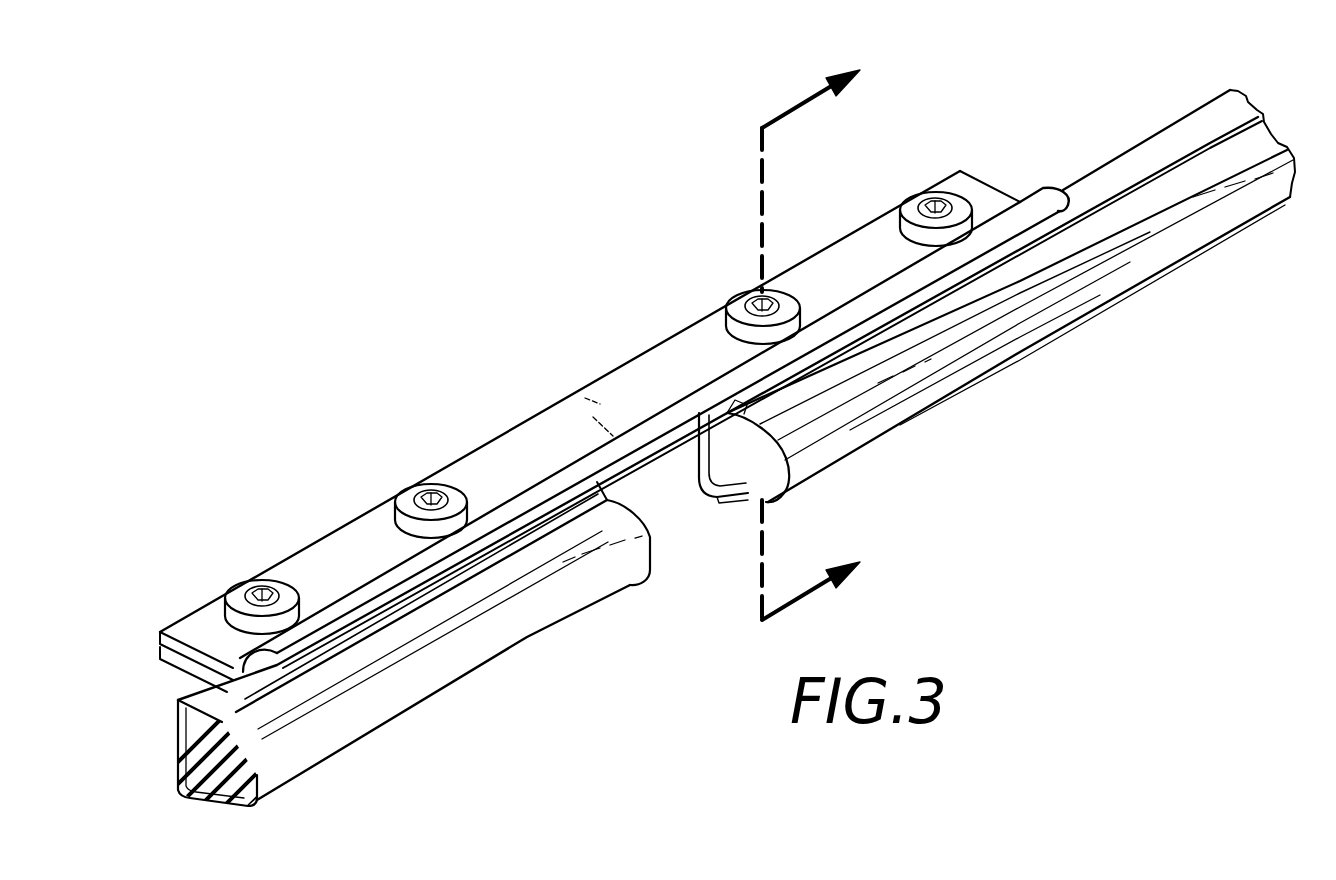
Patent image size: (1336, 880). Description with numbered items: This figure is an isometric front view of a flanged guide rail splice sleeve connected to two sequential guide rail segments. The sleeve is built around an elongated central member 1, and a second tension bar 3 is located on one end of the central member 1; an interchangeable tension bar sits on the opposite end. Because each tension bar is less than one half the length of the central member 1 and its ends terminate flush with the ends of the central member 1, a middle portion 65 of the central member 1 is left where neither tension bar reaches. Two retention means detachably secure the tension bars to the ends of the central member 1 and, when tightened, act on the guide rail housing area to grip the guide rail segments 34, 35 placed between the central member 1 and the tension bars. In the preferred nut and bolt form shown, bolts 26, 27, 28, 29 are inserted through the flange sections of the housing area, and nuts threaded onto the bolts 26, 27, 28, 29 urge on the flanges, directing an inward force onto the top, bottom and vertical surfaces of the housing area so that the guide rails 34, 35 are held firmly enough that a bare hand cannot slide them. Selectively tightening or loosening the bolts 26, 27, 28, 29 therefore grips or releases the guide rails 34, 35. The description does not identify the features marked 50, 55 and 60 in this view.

The central member 1 is at (567, 410).
The second tension bar 3 is at (697, 483).
The bolt 26 is at (247, 577).
The bolt 27 is at (413, 490).
The bolt 28 is at (747, 297).
The bolt 29 is at (922, 193).
The guide rail 34 is at (473, 648).
The guide rail 35 is at (1037, 328).
The rail mounting assembly 50 is at (711, 408).
The carrier strip 55 is at (297, 440).
The section line 5-5 60 is at (781, 92).
The middle portion 65 is at (682, 566).